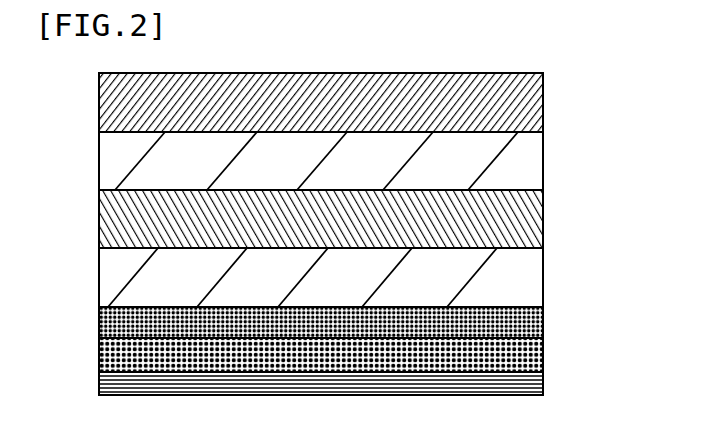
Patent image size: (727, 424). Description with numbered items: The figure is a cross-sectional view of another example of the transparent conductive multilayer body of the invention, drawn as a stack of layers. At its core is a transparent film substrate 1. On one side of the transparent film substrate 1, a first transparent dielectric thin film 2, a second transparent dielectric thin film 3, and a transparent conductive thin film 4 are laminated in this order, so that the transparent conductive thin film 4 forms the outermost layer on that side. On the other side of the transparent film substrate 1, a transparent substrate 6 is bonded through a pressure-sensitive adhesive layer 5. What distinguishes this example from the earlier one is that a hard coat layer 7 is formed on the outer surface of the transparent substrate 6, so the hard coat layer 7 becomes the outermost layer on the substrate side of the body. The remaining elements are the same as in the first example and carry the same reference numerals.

The transparent film substrate 1 is at (520, 278).
The first transparent dielectric thin film 2 is at (543, 312).
The second transparent dielectric thin film 3 is at (543, 345).
The transparent conductive thin film 4 is at (543, 375).
The pressure-sensitive adhesive layer 5 is at (543, 213).
The transparent substrate 6 is at (520, 167).
The hard coat layer 7 is at (543, 97).